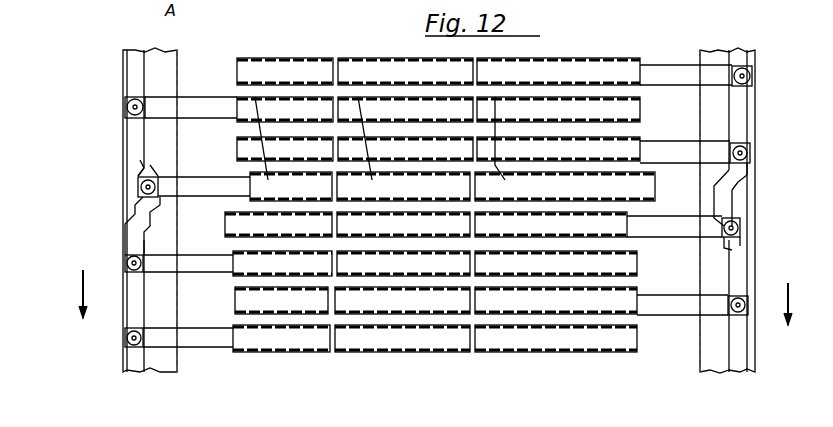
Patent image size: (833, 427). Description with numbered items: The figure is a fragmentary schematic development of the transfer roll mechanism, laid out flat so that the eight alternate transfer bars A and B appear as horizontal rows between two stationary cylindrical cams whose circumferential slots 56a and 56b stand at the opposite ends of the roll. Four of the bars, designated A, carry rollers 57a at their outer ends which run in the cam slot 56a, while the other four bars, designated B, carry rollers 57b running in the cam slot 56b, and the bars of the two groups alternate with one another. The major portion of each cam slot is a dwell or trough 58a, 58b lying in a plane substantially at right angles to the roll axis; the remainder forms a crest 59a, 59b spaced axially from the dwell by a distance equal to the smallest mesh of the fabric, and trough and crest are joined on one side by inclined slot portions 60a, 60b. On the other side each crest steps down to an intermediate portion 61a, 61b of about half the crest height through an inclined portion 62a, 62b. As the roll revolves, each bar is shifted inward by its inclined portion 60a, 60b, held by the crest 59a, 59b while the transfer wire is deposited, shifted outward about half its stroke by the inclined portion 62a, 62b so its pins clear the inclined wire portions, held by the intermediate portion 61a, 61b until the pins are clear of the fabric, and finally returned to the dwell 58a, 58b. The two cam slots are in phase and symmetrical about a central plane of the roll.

The cam slot 56a is at (138, 48).
The cam slot 56b is at (740, 48).
The roller 57a is at (125, 107).
The roller 57b is at (752, 76).
The dwell or trough 58a is at (134, 76).
The dwell or trough 58b is at (752, 117).
The crest 59a is at (143, 198).
The crest 59b is at (735, 198).
The inclined slot portion 60a is at (137, 178).
The inclined slot portion 60b is at (750, 183).
The intermediate portion 61a is at (135, 220).
The intermediate portion 61b is at (748, 247).
The inclined portion 62a is at (160, 216).
The inclined portion 62b is at (745, 216).
The transfer bars A is at (213, 110).
The transfer bars B is at (690, 82).